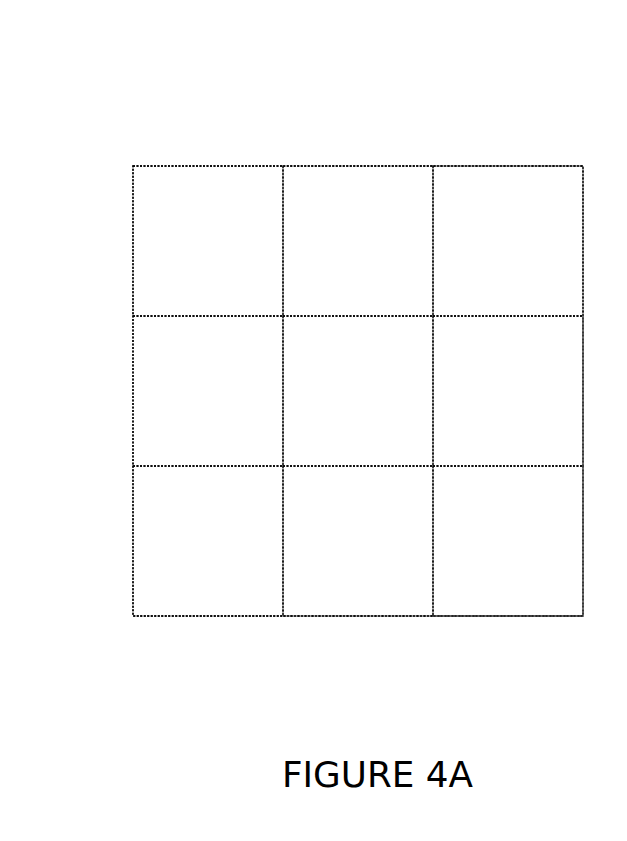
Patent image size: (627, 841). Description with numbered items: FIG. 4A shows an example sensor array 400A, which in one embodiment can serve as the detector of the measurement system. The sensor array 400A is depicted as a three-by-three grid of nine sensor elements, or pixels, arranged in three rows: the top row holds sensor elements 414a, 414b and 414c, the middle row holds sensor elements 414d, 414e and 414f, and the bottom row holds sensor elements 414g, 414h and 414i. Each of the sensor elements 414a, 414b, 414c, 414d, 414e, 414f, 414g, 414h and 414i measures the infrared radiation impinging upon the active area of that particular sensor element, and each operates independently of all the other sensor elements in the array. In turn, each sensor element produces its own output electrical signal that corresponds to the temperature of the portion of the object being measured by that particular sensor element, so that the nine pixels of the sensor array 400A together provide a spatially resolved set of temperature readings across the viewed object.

The sensor array 400A is at (192, 92).
The sensor element 414a is at (208, 241).
The sensor element 414b is at (358, 241).
The sensor element 414c is at (508, 241).
The sensor element 414d is at (208, 391).
The sensor element 414e is at (358, 391).
The sensor element 414f is at (508, 391).
The sensor element 414g is at (208, 541).
The sensor element 414h is at (358, 541).
The sensor element 414i is at (508, 541).